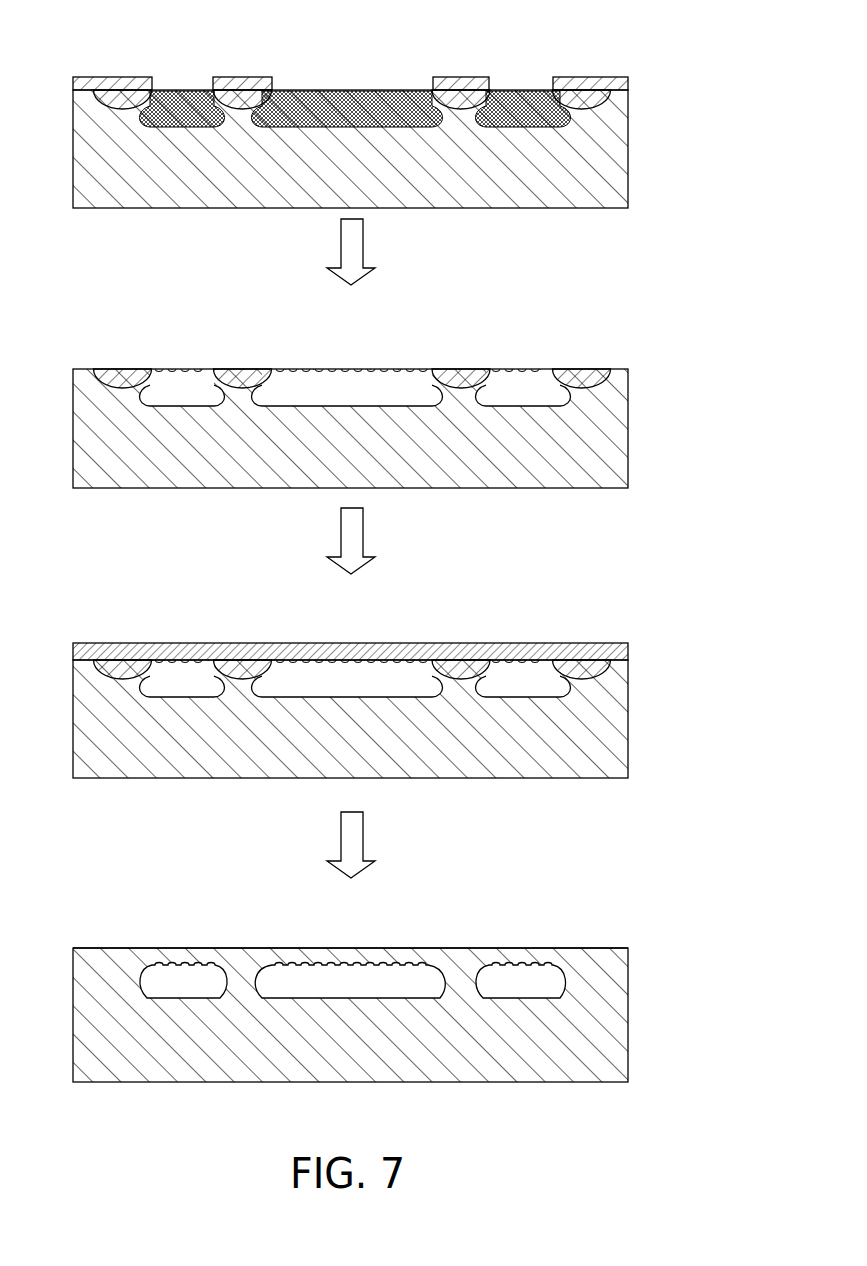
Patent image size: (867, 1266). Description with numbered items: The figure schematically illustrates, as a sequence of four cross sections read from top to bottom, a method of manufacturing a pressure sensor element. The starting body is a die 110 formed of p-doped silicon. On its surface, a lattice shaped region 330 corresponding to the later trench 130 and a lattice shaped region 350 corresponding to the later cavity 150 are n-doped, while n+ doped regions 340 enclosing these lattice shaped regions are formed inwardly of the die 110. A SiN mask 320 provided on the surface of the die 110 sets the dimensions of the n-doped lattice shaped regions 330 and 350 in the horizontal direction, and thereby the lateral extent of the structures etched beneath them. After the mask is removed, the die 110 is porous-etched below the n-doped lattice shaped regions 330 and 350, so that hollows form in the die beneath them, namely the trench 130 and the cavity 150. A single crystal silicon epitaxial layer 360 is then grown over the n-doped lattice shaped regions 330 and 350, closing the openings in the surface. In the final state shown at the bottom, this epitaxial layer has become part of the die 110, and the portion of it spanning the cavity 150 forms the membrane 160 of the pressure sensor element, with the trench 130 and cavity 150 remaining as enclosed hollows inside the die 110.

The die 110 is at (618, 146).
The trench 130 is at (169, 678).
The cavity 150 is at (318, 684).
The membrane 160 is at (412, 955).
The SiN mask 320 is at (592, 82).
The lattice shaped region 330 is at (518, 90).
The n+ doped regions 340 is at (238, 90).
The lattice shaped region 350 is at (349, 90).
The single crystal silicon epitaxial layer 360 is at (411, 652).